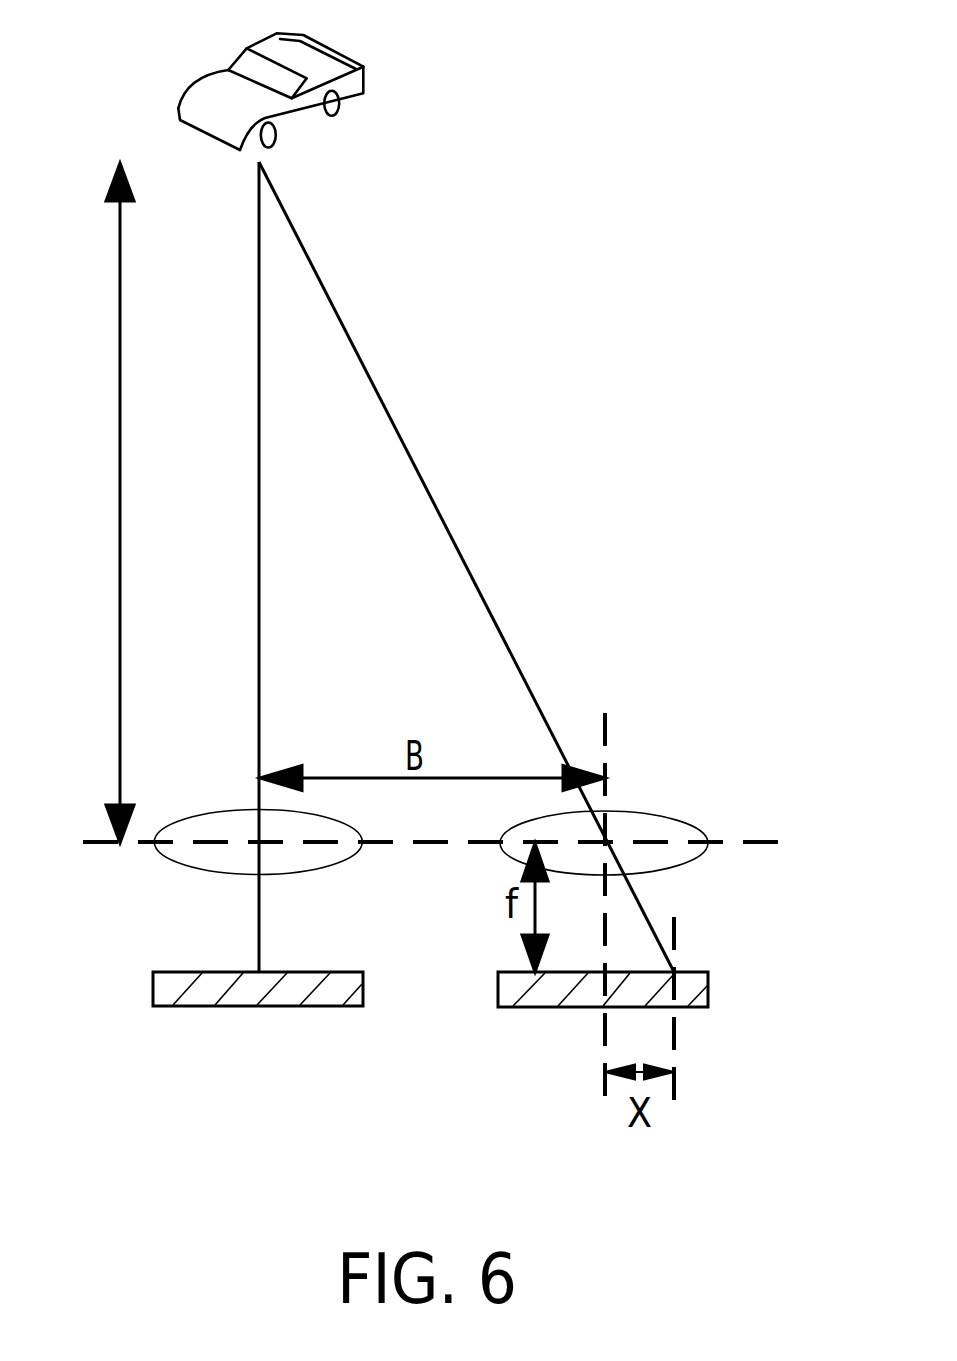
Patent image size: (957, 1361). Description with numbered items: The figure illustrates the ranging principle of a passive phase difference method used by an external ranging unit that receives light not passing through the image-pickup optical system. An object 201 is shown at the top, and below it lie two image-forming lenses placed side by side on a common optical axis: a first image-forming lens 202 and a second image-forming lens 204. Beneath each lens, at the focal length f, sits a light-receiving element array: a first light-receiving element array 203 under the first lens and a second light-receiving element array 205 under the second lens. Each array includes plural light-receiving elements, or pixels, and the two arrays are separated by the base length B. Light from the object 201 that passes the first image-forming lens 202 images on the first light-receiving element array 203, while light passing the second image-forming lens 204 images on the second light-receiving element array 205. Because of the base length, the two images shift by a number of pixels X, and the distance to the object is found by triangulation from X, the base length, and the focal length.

The object 201 is at (390, 68).
The first image-forming lens 202 is at (175, 874).
The first light-receiving element array 203 is at (162, 1032).
The second image-forming lens 204 is at (688, 815).
The second light-receiving element array 205 is at (538, 1027).